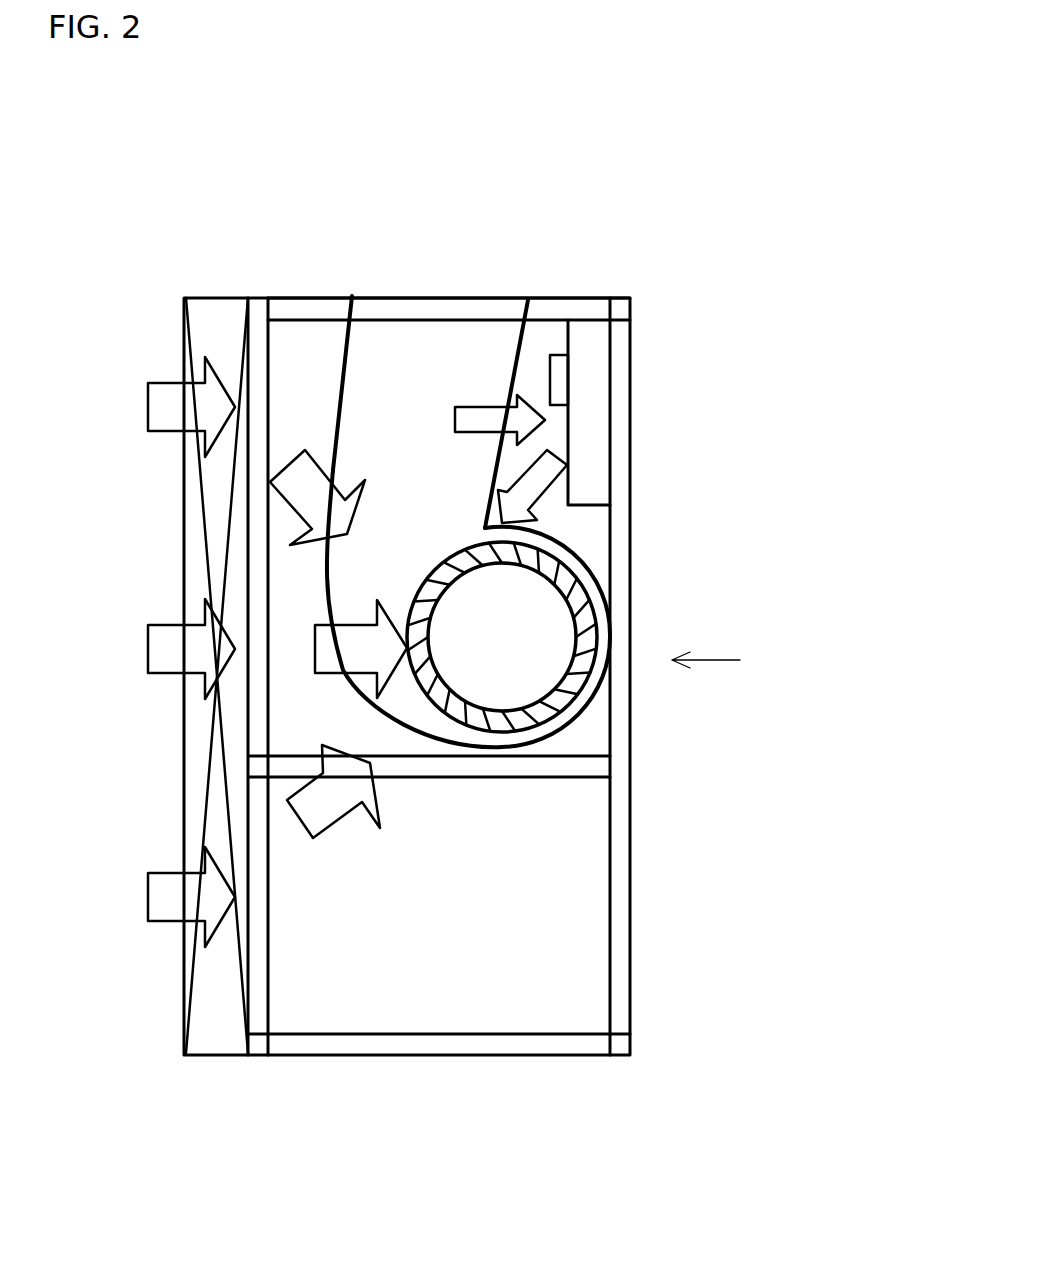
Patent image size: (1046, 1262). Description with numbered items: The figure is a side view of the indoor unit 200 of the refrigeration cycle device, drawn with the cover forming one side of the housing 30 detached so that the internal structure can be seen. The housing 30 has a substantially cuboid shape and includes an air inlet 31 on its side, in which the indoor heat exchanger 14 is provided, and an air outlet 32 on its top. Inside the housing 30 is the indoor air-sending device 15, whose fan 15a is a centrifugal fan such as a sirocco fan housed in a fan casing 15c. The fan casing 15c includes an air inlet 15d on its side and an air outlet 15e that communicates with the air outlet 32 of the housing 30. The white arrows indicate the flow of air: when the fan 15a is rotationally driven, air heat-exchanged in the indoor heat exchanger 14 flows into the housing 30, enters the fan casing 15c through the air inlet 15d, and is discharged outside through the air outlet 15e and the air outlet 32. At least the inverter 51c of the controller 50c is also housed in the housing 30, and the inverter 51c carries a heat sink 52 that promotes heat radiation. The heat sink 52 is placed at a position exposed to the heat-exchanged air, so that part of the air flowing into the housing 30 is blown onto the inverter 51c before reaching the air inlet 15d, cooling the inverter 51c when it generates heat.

The indoor unit 200 is at (645, 262).
The housing 30 is at (617, 953).
The air inlet 31 is at (247, 817).
The indoor heat exchanger 14 is at (210, 333).
The air outlet 32 is at (412, 298).
The heat sink 52 is at (553, 352).
The controller 50c is at (675, 412).
The inverter 51c is at (605, 370).
The indoor air-sending device 15 is at (400, 732).
The fan 15a is at (575, 708).
The fan casing 15c is at (340, 425).
The air inlet 15d is at (518, 677).
The air outlet 15e is at (438, 312).